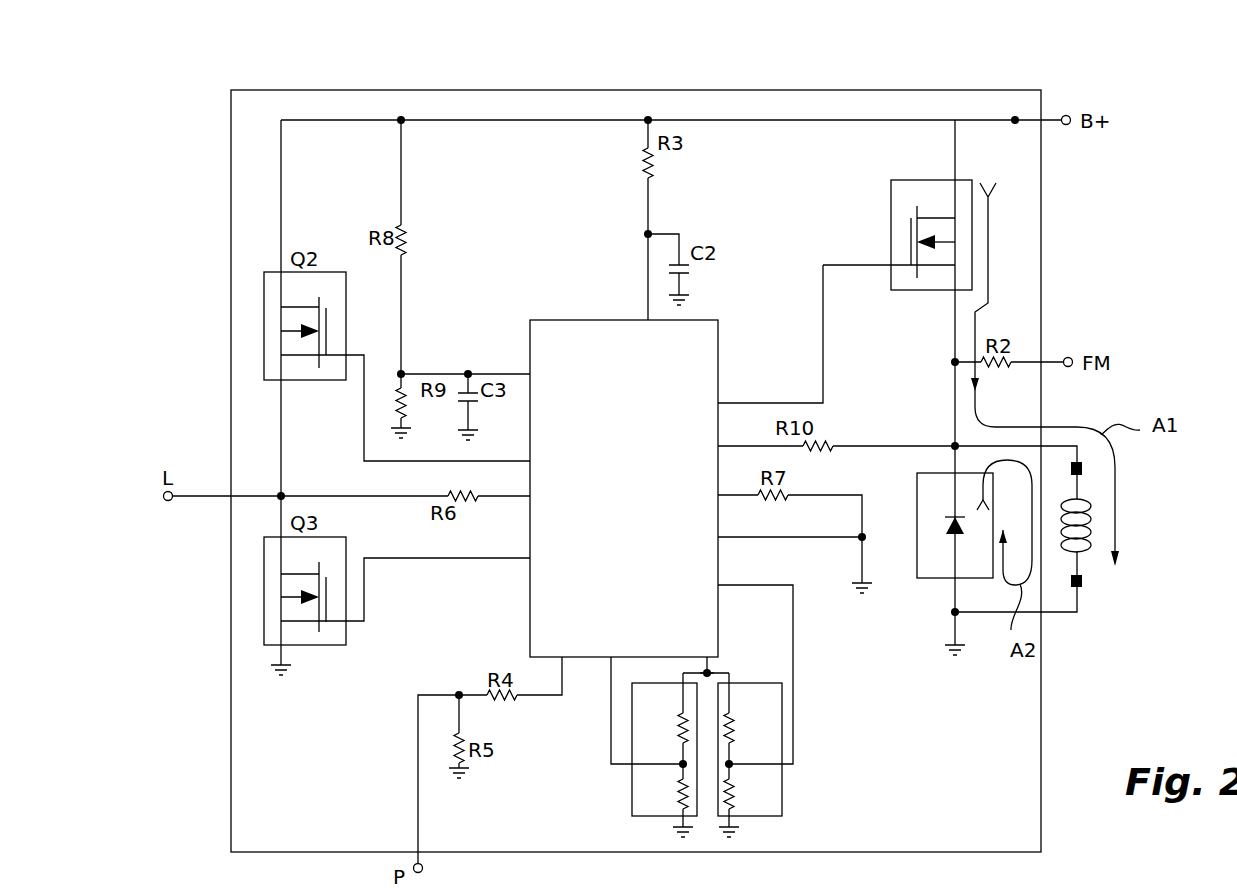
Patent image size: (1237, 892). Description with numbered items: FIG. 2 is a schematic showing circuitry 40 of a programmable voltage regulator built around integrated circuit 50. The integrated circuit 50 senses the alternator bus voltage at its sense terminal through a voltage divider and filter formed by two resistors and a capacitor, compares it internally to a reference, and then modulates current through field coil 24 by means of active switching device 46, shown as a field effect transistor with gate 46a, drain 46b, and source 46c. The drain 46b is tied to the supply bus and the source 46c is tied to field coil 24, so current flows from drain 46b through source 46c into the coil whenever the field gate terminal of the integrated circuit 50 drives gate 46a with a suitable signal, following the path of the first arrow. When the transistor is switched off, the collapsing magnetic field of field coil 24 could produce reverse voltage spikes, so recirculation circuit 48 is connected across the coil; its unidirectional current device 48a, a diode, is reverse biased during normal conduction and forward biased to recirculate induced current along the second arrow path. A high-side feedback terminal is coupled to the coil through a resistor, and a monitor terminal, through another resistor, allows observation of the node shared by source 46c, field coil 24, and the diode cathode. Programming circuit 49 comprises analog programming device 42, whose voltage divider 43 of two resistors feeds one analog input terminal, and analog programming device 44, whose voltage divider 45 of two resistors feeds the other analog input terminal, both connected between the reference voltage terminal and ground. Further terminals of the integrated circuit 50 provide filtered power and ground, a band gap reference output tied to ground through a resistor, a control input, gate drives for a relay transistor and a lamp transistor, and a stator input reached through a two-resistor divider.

The circuitry 40 is at (876, 83).
The integrated circuit 50 is at (652, 501).
The active switching device 46 is at (925, 233).
The gate 46a is at (911, 237).
The drain 46b is at (955, 199).
The source 46c is at (955, 277).
The recirculation circuit 48 is at (934, 559).
The unidirectional current device 48a is at (948, 526).
The programming circuit 49 is at (731, 657).
The analog programming device 42 is at (632, 800).
The voltage divider 43 is at (683, 752).
The analog programming device 44 is at (782, 790).
The voltage divider 45 is at (730, 755).
The field coil 24 is at (1085, 502).